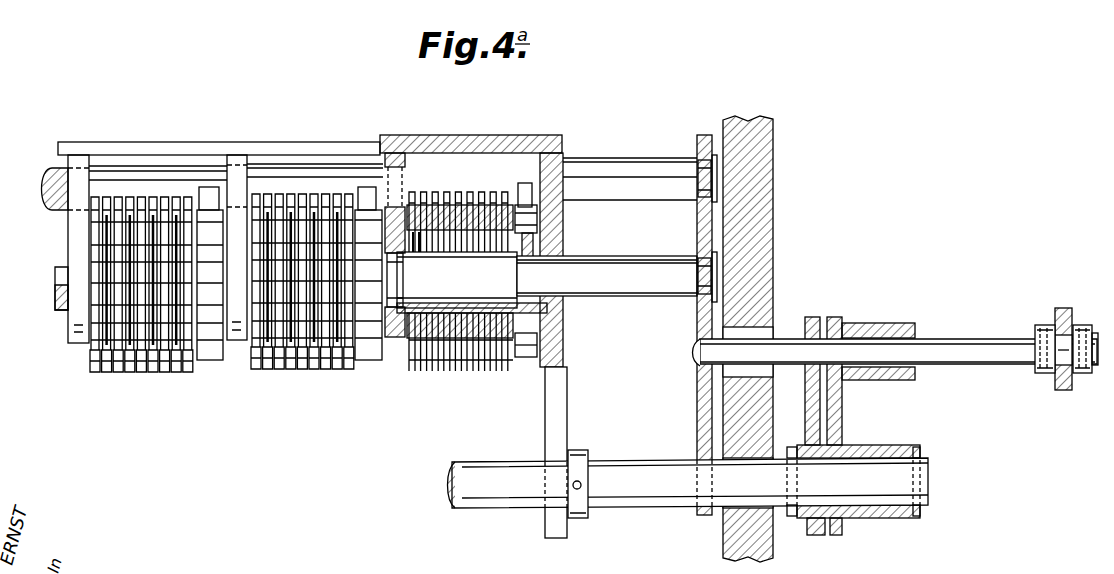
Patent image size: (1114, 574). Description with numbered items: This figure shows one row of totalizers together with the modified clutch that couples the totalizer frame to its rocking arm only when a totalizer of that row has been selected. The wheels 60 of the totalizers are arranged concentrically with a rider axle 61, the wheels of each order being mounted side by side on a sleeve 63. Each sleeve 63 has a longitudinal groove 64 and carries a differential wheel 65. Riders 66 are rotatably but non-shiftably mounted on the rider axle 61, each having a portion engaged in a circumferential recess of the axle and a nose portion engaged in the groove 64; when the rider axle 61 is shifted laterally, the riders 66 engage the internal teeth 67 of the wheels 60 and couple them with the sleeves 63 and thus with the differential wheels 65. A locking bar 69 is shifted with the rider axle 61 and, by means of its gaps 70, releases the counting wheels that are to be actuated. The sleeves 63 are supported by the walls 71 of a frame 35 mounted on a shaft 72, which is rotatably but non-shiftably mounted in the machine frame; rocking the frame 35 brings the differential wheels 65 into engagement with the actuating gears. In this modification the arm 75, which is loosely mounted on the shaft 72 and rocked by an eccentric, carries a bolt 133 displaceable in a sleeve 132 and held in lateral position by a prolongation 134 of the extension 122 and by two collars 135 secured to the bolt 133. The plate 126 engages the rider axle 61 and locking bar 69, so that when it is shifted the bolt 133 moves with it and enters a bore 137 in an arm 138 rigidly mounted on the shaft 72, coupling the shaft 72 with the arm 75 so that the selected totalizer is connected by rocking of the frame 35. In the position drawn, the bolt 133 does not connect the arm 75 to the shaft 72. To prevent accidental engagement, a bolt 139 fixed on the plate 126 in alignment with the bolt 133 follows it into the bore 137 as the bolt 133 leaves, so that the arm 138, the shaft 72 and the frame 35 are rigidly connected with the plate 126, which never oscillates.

The frame 35 is at (194, 142).
The wheels 60 is at (108, 378).
The rider axle 61 is at (58, 286).
The sleeve 63 is at (441, 305).
The longitudinal groove 64 is at (478, 257).
The differential wheel 65 is at (215, 360).
The rider 66 is at (545, 248).
The internal teeth 67 is at (423, 242).
The locking bar 69 is at (630, 172).
The gaps 70 is at (198, 192).
The walls 71 is at (240, 178).
The shaft 72 is at (645, 500).
The arm 75 is at (838, 426).
The extension 122 is at (1060, 314).
The plate 126 is at (698, 316).
The sleeve 132 is at (883, 328).
The bolt 133 is at (979, 343).
The prolongation 134 is at (1064, 310).
The collars 135 is at (1088, 373).
The bore 137 is at (817, 322).
The arm 138 is at (815, 398).
The bolt 139 is at (786, 345).